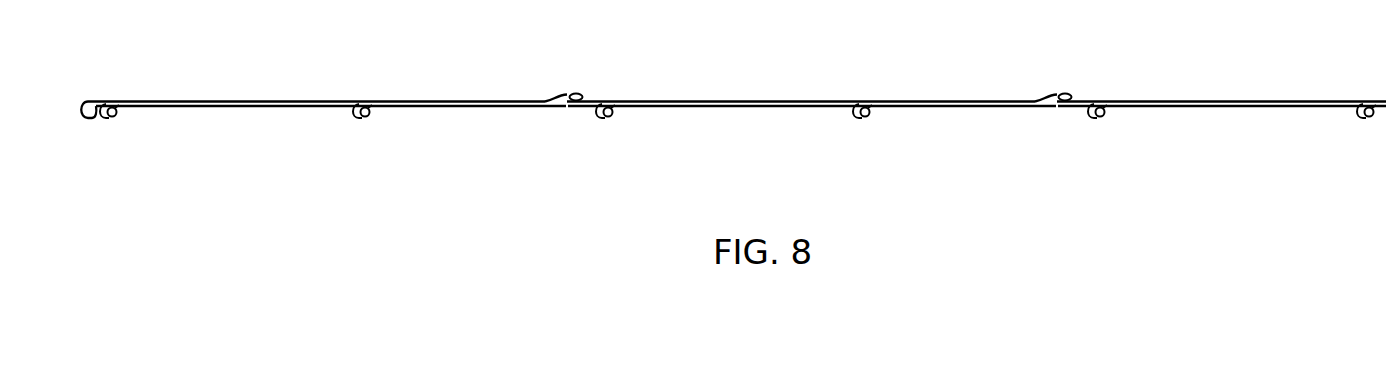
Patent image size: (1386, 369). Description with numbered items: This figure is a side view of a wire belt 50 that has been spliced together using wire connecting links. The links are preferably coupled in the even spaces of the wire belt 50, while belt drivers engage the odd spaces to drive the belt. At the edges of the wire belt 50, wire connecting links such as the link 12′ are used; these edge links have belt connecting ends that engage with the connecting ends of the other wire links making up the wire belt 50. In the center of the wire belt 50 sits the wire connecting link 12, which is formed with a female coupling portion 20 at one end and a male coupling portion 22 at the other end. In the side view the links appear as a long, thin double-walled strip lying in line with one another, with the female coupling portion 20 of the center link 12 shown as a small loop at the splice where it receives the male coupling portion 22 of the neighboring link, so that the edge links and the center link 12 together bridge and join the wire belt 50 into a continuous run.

The wire connecting link 12′ is at (421, 101).
The wire connecting link 12 is at (981, 101).
The female coupling portion 20 is at (579, 93).
The male coupling portion 22 is at (559, 107).
The wire belt 50 is at (770, 67).